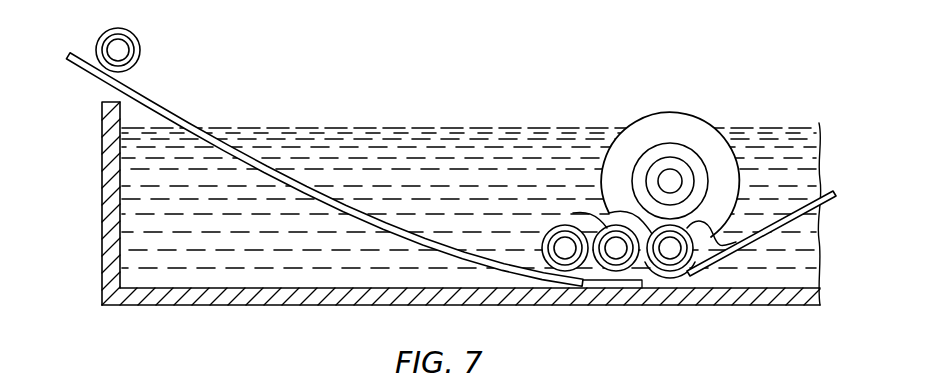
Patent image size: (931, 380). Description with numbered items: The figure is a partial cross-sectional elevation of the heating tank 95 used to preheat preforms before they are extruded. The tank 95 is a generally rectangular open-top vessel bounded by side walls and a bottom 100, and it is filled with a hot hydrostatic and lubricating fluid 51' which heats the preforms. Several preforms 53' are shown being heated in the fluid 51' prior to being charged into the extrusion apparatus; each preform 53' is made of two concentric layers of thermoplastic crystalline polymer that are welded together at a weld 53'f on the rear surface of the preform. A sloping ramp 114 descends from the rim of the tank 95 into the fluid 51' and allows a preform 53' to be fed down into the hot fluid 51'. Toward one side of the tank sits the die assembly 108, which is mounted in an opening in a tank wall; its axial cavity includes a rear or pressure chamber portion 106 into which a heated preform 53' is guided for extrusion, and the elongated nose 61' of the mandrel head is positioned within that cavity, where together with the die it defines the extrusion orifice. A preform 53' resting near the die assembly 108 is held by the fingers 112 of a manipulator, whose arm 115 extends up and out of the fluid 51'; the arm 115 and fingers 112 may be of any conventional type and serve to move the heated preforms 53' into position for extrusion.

The hydrostatic and lubricating fluid 51' is at (469, 198).
The preform 53' is at (416, 137).
The weld 53'f is at (590, 285).
The elongated nose 61' is at (685, 161).
The tank 95 is at (100, 138).
The bottom 100 is at (284, 307).
The rear or pressure chamber portion 106 is at (667, 152).
The die assembly 108 is at (655, 103).
The fingers 112 is at (693, 280).
The sloping ramp 114 is at (189, 122).
The arm 115 is at (797, 220).